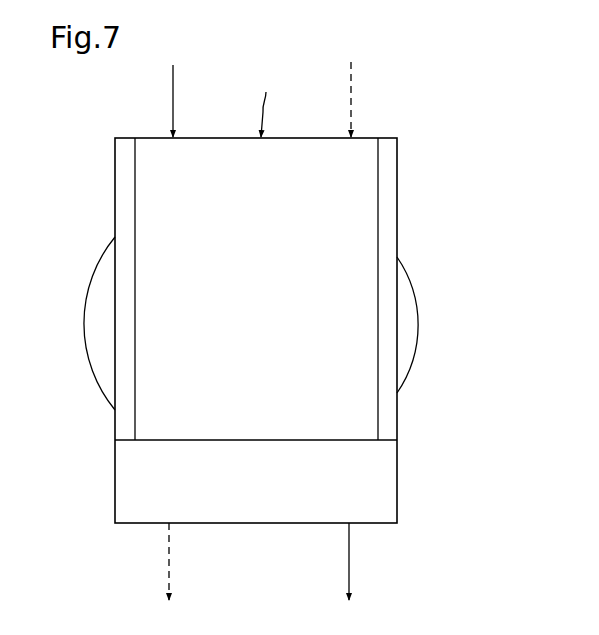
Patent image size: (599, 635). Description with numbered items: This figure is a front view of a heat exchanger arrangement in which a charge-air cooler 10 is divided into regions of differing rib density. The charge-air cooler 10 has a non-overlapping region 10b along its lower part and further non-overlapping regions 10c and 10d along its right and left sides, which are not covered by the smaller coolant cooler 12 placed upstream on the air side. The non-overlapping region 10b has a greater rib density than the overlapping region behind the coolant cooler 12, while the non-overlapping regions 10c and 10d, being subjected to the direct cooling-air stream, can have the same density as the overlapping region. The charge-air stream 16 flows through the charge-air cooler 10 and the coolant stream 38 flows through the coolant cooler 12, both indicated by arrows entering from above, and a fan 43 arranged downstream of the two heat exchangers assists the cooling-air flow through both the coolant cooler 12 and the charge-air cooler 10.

The charge-air cooler 10 is at (254, 330).
The non-overlapping region 10b is at (385, 484).
The non-overlapping region 10c is at (390, 236).
The non-overlapping region 10d is at (122, 197).
The coolant cooler 12 is at (269, 103).
The charge-air stream 16 is at (351, 86).
The coolant stream 38 is at (173, 80).
The fan 43 is at (413, 333).